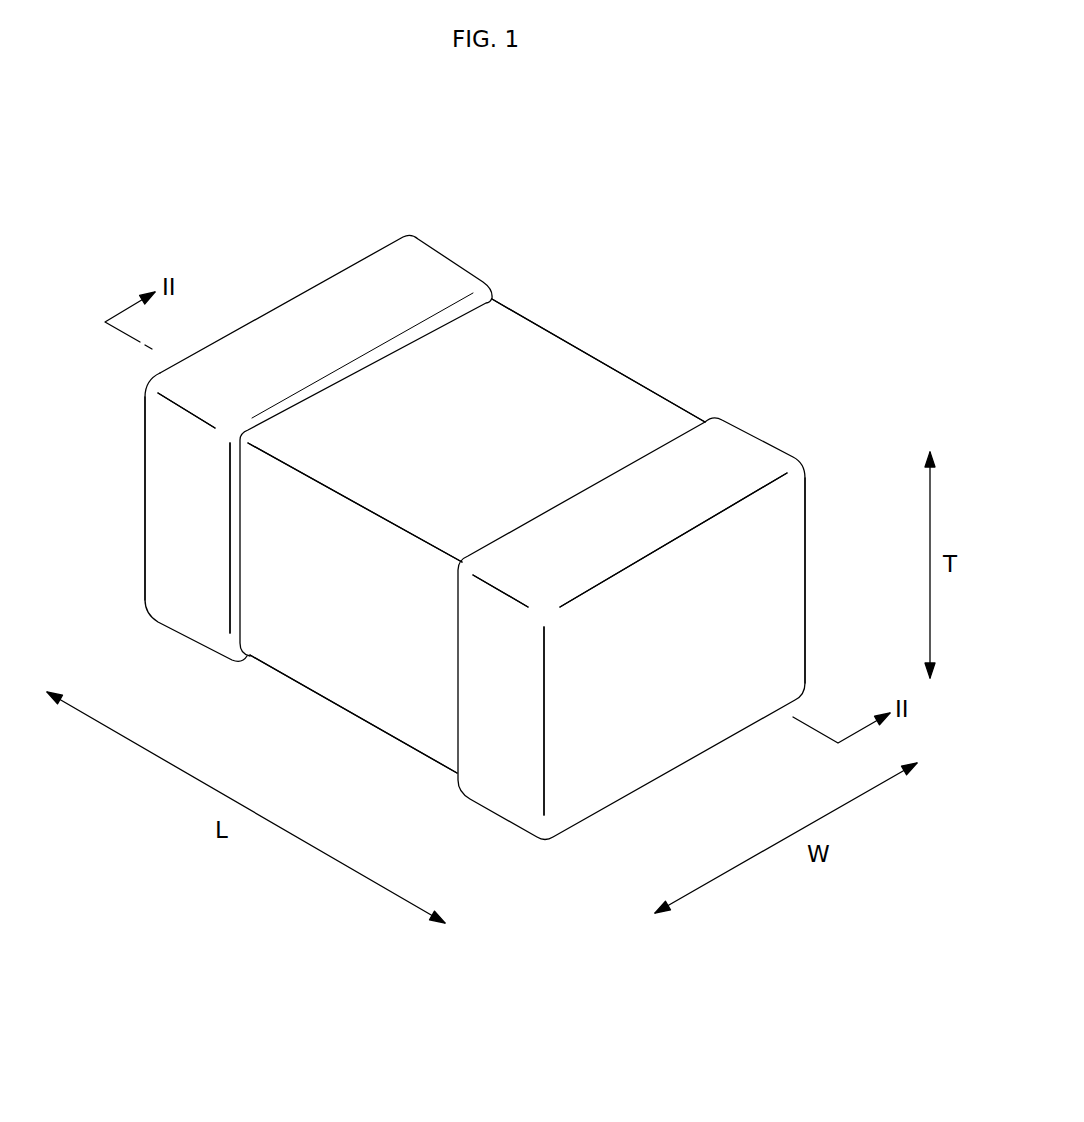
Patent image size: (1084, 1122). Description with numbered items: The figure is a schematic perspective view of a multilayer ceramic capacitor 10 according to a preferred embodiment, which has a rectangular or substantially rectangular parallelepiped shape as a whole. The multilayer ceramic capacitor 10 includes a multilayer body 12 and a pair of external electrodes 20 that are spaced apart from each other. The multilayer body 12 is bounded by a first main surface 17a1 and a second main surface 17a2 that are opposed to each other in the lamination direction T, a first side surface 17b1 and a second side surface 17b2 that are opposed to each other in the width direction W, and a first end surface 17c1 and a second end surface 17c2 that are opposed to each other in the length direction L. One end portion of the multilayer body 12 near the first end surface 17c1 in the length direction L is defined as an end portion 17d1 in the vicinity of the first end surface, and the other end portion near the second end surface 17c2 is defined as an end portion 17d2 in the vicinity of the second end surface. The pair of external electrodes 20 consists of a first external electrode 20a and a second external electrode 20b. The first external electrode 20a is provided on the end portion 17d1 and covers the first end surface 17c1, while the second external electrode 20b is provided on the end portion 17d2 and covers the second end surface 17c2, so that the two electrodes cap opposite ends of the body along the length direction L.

The multilayer ceramic capacitor 10 is at (846, 300).
The multilayer body 12 is at (387, 393).
The first main surface 17a1 is at (512, 432).
The second main surface 17a2 is at (438, 737).
The first side surface 17b1 is at (372, 643).
The second side surface 17b2 is at (603, 402).
The first end surface 17c1 is at (668, 715).
The second end surface 17c2 is at (187, 508).
The end portion in the vicinity of the first end surface 17d1 is at (573, 760).
The end portion in the vicinity of the second end surface 17d2 is at (290, 343).
The external electrodes 20 is at (438, 158).
The first external electrode 20a is at (758, 453).
The second external electrode 20b is at (412, 267).